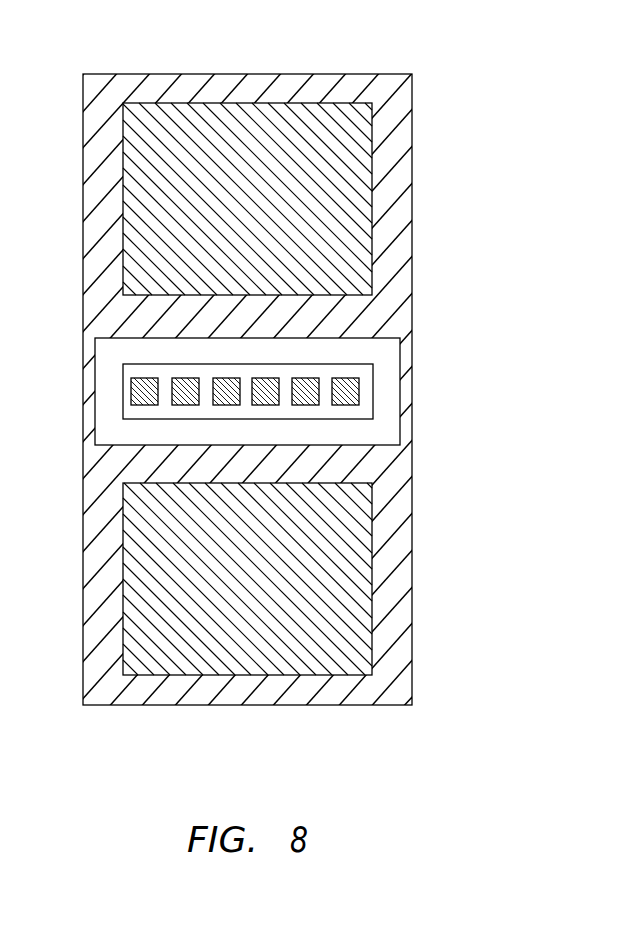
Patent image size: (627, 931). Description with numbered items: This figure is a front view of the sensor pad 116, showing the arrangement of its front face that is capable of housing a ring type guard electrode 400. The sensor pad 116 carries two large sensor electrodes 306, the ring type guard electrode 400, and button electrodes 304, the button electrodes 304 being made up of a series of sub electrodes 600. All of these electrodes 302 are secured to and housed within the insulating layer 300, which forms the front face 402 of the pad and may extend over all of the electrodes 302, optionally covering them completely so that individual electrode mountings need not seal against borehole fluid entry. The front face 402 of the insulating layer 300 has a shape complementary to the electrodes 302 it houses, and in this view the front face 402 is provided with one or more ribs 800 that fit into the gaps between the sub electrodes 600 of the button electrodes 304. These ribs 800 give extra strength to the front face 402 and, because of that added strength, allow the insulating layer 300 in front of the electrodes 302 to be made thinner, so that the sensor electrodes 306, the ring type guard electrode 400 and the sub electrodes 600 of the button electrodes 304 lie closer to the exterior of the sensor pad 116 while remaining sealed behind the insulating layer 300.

The sensor pad 116 is at (378, 731).
The insulating layer 300 is at (273, 74).
The electrodes 302 is at (380, 228).
The button electrodes 304 is at (382, 387).
The sensor electrodes 306 is at (263, 200).
The ring type guard electrode 400 is at (383, 353).
The front face 402 is at (373, 318).
The sub electrodes 600 is at (335, 406).
The ribs 800 is at (160, 382).